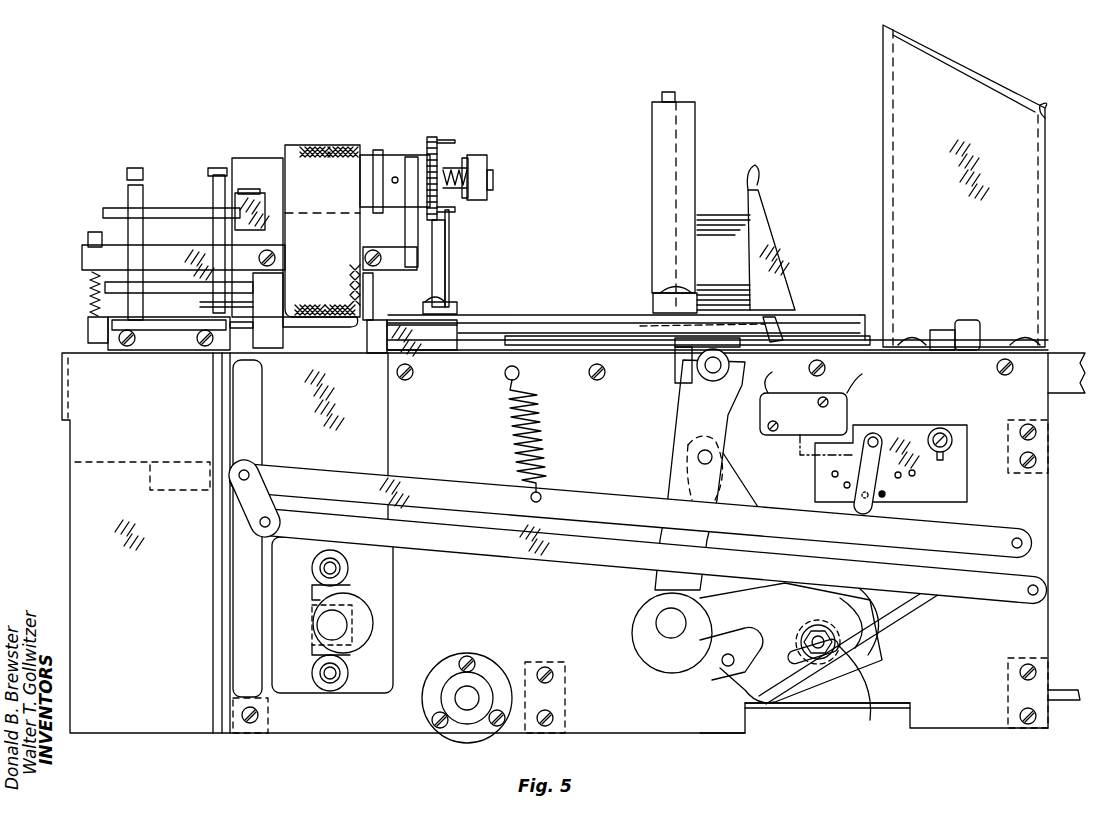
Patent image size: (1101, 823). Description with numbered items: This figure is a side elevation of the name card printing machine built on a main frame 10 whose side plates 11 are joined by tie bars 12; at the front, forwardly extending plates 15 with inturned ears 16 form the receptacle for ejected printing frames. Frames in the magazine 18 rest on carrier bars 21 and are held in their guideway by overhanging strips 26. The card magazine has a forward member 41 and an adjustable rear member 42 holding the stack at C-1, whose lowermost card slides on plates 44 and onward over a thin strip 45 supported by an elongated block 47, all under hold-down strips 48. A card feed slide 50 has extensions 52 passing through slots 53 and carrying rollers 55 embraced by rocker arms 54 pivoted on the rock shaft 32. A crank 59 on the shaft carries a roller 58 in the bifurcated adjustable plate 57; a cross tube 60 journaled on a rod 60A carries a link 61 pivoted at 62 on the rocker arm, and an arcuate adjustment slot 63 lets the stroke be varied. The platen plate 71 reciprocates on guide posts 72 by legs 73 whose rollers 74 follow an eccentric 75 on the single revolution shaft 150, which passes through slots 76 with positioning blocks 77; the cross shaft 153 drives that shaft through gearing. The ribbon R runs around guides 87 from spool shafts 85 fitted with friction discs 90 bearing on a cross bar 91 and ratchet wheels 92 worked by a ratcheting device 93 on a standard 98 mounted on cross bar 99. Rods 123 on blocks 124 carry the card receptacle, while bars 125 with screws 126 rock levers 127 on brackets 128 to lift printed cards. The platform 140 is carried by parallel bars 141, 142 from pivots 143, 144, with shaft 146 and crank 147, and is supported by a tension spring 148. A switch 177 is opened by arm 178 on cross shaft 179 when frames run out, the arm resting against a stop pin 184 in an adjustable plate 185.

The main frame 10 is at (696, 734).
The side plate 11 is at (555, 543).
The tie bar 12 is at (565, 700).
The forwardly extending plate 15 is at (70, 490).
The inturned front ear 16 is at (62, 388).
The magazine 18 is at (885, 82).
The carrier bar 21 is at (1060, 375).
The overhanging strip 26 is at (525, 325).
The rock shaft 32 is at (665, 618).
The forward member 41 is at (652, 140).
The adjustable rear member 42 is at (760, 180).
The stack of cards C-1 is at (735, 245).
The card support plate 44 is at (470, 365).
The thin strip 45 is at (410, 322).
The elongated block 47 is at (451, 392).
The hold-down strip 48 is at (540, 320).
The card feed slide 50 is at (638, 322).
The slide extension 52 is at (674, 364).
The slot 53 is at (585, 330).
The rocker arm 54 is at (680, 408).
The roller 55 is at (700, 375).
The adjustable plate 57 is at (918, 612).
The roller 58 is at (770, 668).
The crank 59 is at (680, 660).
The cross tube 60 is at (823, 665).
The rod 60A is at (871, 722).
The link 61 is at (758, 488).
The pivotal connection 62 is at (697, 455).
The arcuate adjustment slot 63 is at (867, 623).
The horizontal plate 71 is at (395, 255).
The guide post 72 is at (245, 185).
The leg 73 is at (380, 430).
The roller 74 is at (348, 570).
The eccentric 75 is at (372, 618).
The slot 76 is at (312, 592).
The positioning block 77 is at (312, 648).
The spool shaft 85 is at (493, 180).
The ribbon guide 87 is at (382, 310).
The friction disc 90 is at (468, 160).
The cross bar 91 is at (475, 200).
The ratchet wheel 92 is at (430, 135).
The ratcheting device 93 is at (445, 260).
The standard 98 is at (449, 280).
The cross bar 99 is at (457, 310).
The horizontal rod 123 is at (112, 208).
The block 124 is at (255, 190).
The bar 125 is at (82, 258).
The adjustment screw 126 is at (90, 285).
The lever 127 is at (90, 335).
The bracket 128 is at (160, 342).
The platform 140 is at (145, 460).
The upper parallel bar 141 is at (468, 485).
The lower parallel bar 142 is at (505, 575).
The pivot 143 is at (1020, 537).
The pivot 144 is at (1030, 596).
The shaft 146 is at (250, 470).
The crank 147 is at (250, 497).
The tension spring 148 is at (545, 428).
The single revolution shaft 150 is at (318, 628).
The cross shaft 153 is at (462, 690).
The switch 177 is at (790, 436).
The arm 178 is at (885, 440).
The cross shaft 179 is at (877, 437).
The stop pin 184 is at (885, 495).
The adjustable plate 185 is at (955, 435).
The ribbon R is at (321, 236).